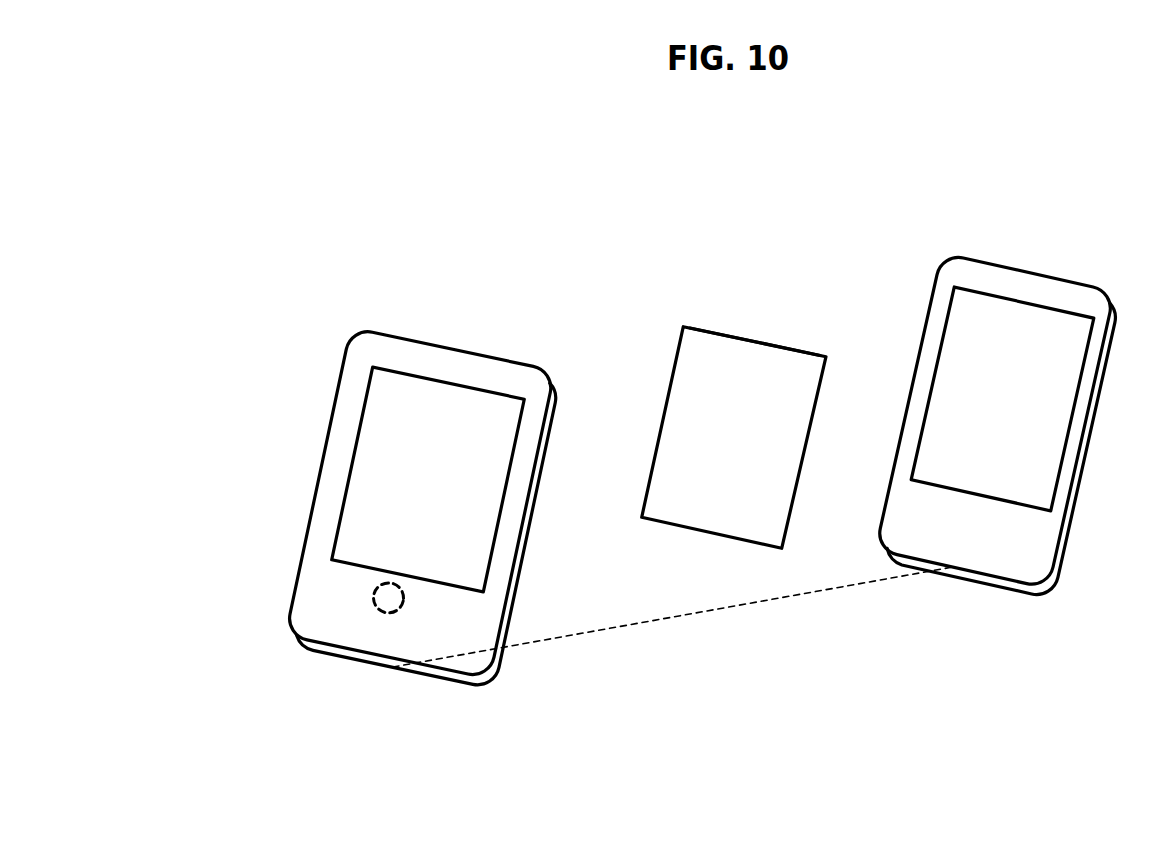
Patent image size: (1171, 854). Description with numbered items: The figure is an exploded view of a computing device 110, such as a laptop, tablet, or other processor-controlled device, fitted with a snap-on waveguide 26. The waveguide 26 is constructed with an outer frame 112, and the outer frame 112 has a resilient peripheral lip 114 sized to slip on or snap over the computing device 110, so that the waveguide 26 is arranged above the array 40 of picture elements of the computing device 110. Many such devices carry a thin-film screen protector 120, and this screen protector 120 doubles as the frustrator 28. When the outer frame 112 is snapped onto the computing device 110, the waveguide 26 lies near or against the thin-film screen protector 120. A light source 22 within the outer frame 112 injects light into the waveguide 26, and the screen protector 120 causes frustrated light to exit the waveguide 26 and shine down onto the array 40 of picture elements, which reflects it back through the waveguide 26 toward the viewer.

The computing device 110 is at (1030, 272).
The outer frame 112 is at (367, 348).
The peripheral lip 114 is at (478, 686).
The waveguide 26 is at (362, 483).
The light source 22 is at (372, 599).
The frustrator 28 is at (754, 337).
The thin-film screen protector 120 is at (695, 339).
The array of picture elements 40 is at (1058, 392).